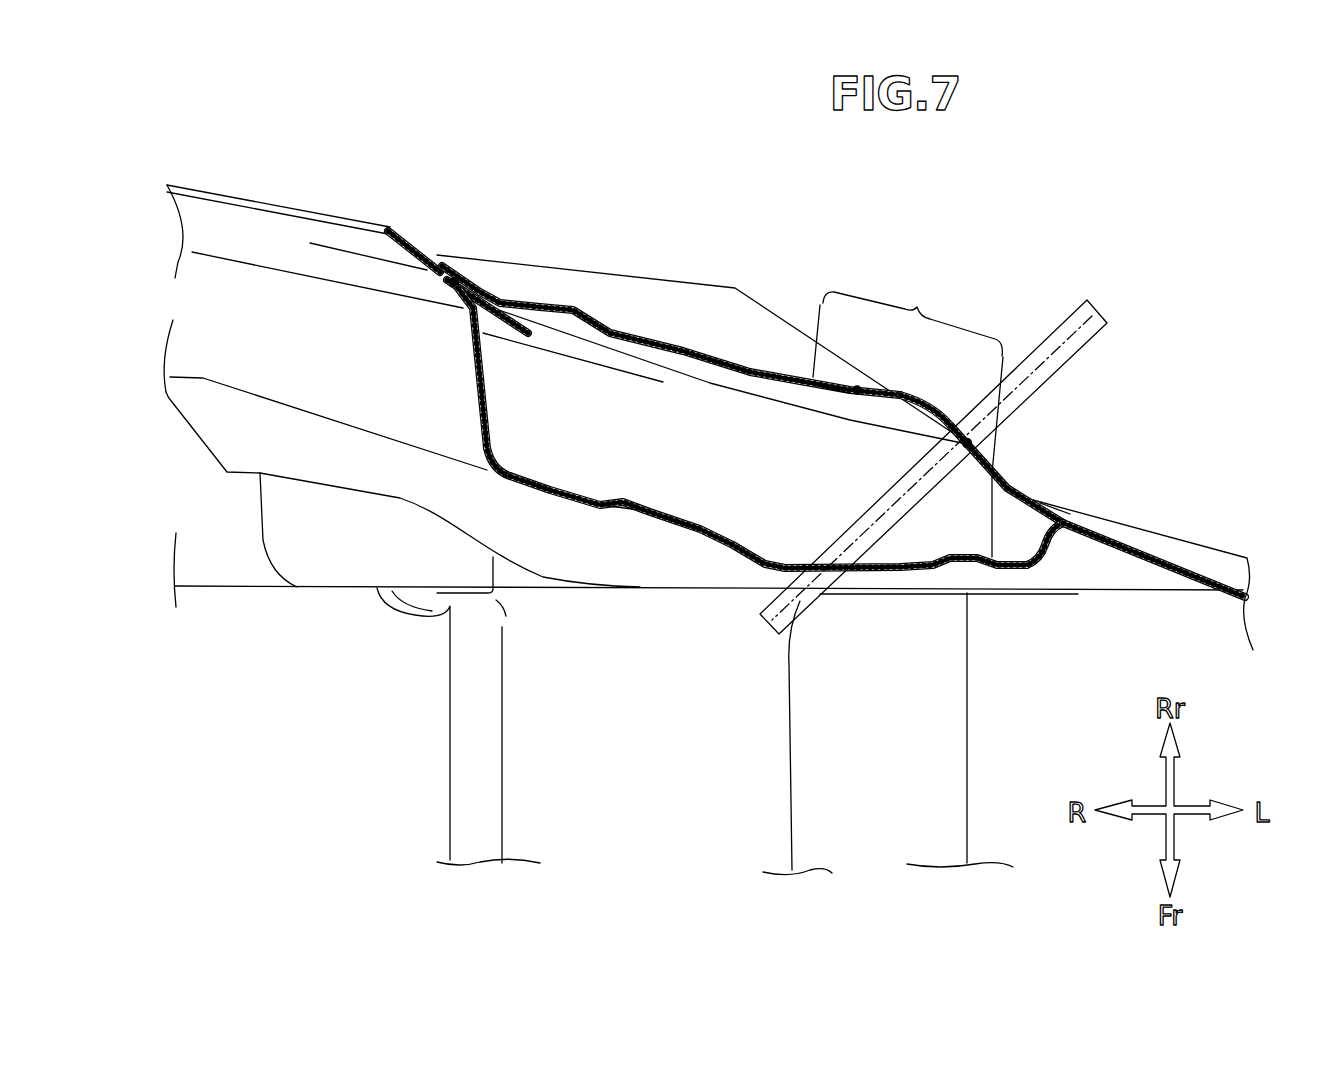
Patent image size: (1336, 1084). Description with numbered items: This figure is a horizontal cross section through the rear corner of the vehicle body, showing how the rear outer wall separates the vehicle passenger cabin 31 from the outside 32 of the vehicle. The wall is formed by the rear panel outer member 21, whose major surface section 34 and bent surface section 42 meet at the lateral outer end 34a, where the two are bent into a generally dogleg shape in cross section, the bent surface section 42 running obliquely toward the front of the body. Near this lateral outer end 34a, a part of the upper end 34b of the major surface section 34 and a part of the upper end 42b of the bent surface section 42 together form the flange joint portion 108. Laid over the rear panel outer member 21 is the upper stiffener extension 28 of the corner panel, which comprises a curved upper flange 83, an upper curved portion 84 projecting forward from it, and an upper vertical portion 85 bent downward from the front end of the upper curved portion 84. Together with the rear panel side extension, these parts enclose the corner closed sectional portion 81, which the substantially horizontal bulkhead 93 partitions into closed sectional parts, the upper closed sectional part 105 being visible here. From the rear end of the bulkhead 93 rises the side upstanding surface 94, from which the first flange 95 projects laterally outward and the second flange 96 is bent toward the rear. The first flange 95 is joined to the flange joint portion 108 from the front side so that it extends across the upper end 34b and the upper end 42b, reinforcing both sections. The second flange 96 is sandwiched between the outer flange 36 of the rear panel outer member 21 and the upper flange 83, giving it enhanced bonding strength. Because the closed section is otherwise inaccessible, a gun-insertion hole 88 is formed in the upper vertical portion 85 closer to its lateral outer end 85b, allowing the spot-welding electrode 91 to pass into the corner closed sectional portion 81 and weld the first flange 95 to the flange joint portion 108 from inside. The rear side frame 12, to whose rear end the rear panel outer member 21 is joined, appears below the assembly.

The rear side frame 12 is at (523, 790).
The rear panel outer member 21 is at (678, 330).
The upper stiffener extension 28 is at (600, 504).
The vehicle passenger cabin 31 is at (650, 783).
The outside of the vehicle 32 is at (644, 128).
The major surface section 34 is at (748, 368).
The lateral outer end of the major surface section 34a is at (915, 395).
The upper end of the major surface section 34b is at (836, 383).
The outer flange 36 is at (403, 224).
The bent surface section 42 is at (1165, 552).
The upper end of the bent surface section 42b is at (958, 438).
The corner closed sectional portion 81 is at (545, 485).
The upper flange 83 is at (270, 245).
The upper curved portion 84 is at (357, 402).
The upper vertical portion 85 is at (703, 532).
The lateral outer end of the upper vertical portion 85b is at (1100, 552).
The gun-insertion hole 88 is at (888, 597).
The electrode 91 is at (1060, 322).
The bulkhead 93 is at (703, 470).
The side upstanding surface 94 is at (480, 363).
The first flange 95 is at (962, 443).
The second flange 96 is at (453, 303).
The upper closed sectional part 105 is at (635, 432).
The flange joint portion 108 is at (908, 416).